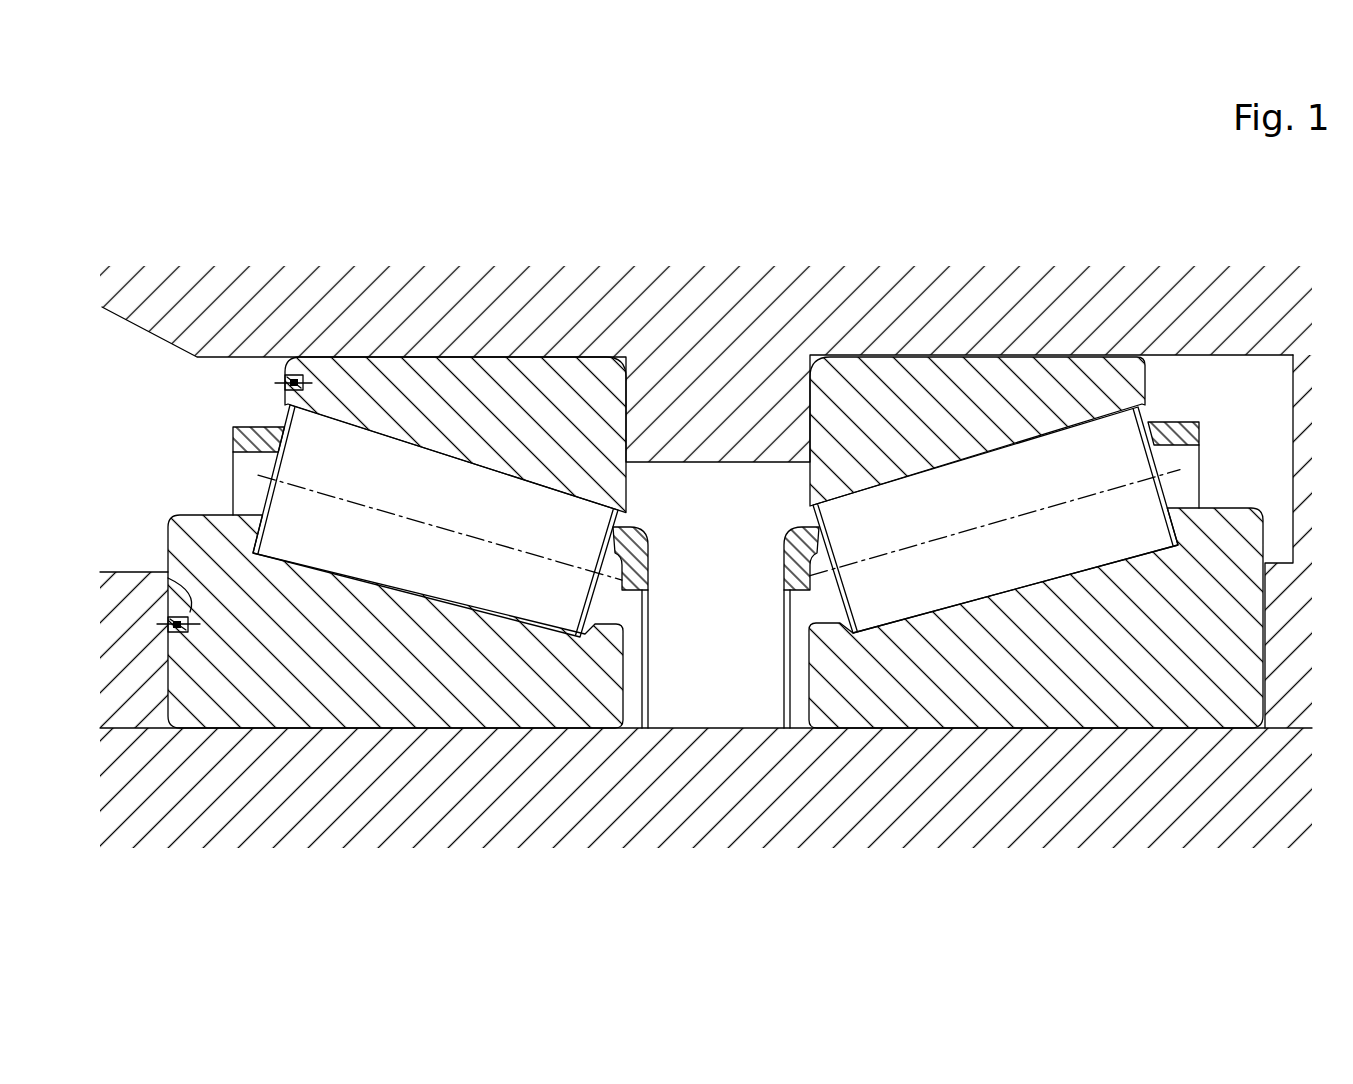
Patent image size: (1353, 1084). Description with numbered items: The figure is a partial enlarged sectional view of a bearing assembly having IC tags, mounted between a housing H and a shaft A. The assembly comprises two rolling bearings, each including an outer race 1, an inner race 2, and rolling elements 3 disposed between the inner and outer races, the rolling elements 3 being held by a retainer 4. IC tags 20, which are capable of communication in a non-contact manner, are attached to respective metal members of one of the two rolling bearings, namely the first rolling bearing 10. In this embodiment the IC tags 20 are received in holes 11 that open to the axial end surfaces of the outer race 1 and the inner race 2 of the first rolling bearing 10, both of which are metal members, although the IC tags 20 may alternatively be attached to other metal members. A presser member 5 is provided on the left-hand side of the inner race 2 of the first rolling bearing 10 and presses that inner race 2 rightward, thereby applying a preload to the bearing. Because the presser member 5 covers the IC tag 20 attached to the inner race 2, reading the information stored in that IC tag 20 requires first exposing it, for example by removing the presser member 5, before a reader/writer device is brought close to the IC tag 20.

The outer race 1 is at (530, 380).
The inner race 2 is at (292, 657).
The rolling elements 3 is at (405, 482).
The retainer 4 is at (236, 431).
The presser member 5 is at (132, 608).
The rolling bearing 10 is at (1092, 258).
The hole 11 is at (283, 383).
The IC tag 20 is at (308, 361).
The housing H is at (258, 320).
The shaft A is at (1187, 793).